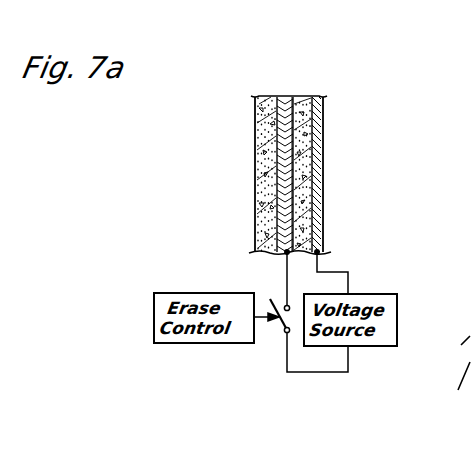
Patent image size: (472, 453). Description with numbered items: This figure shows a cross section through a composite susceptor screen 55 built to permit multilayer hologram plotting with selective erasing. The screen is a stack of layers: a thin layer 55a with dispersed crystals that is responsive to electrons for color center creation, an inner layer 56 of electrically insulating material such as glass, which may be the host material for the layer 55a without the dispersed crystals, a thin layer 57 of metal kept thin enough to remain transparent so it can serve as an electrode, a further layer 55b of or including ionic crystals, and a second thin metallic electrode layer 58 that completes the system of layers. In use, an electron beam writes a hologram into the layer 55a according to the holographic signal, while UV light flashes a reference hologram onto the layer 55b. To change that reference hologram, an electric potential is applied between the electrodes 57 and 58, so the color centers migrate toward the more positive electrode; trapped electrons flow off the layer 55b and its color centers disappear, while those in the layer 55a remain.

The susceptor screen 55 is at (207, 187).
The thin layer with dispersed crystals 55a is at (255, 150).
The layer of ionic crystals 55b is at (302, 97).
The inner layer 56 is at (283, 97).
The thin metal electrode layer 57 is at (292, 97).
The second thin metallic electrode layer 58 is at (323, 147).